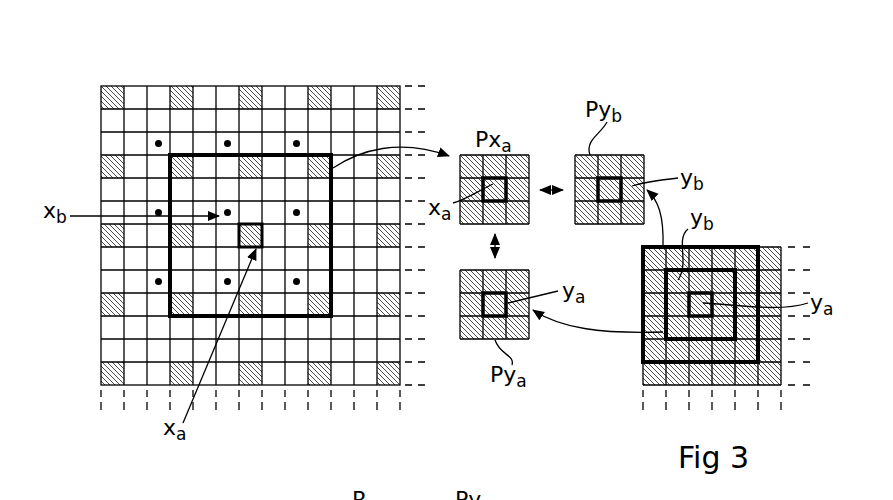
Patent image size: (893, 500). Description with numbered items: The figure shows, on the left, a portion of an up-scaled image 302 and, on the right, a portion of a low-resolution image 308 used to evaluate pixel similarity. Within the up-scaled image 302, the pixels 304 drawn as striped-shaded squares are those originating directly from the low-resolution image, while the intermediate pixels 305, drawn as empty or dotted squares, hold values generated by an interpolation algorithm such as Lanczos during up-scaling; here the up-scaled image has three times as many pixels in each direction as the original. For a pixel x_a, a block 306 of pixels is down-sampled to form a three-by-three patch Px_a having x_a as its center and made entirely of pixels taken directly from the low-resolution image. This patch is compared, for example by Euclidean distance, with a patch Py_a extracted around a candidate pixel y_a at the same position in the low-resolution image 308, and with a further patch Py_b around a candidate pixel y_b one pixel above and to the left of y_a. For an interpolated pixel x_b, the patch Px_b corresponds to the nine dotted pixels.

The up-scaled image 302 is at (248, 84).
The pixels 304 is at (115, 86).
The intermediate pixels 305 is at (207, 86).
The block of pixels 306 is at (276, 155).
The low-resolution image 308 is at (750, 247).